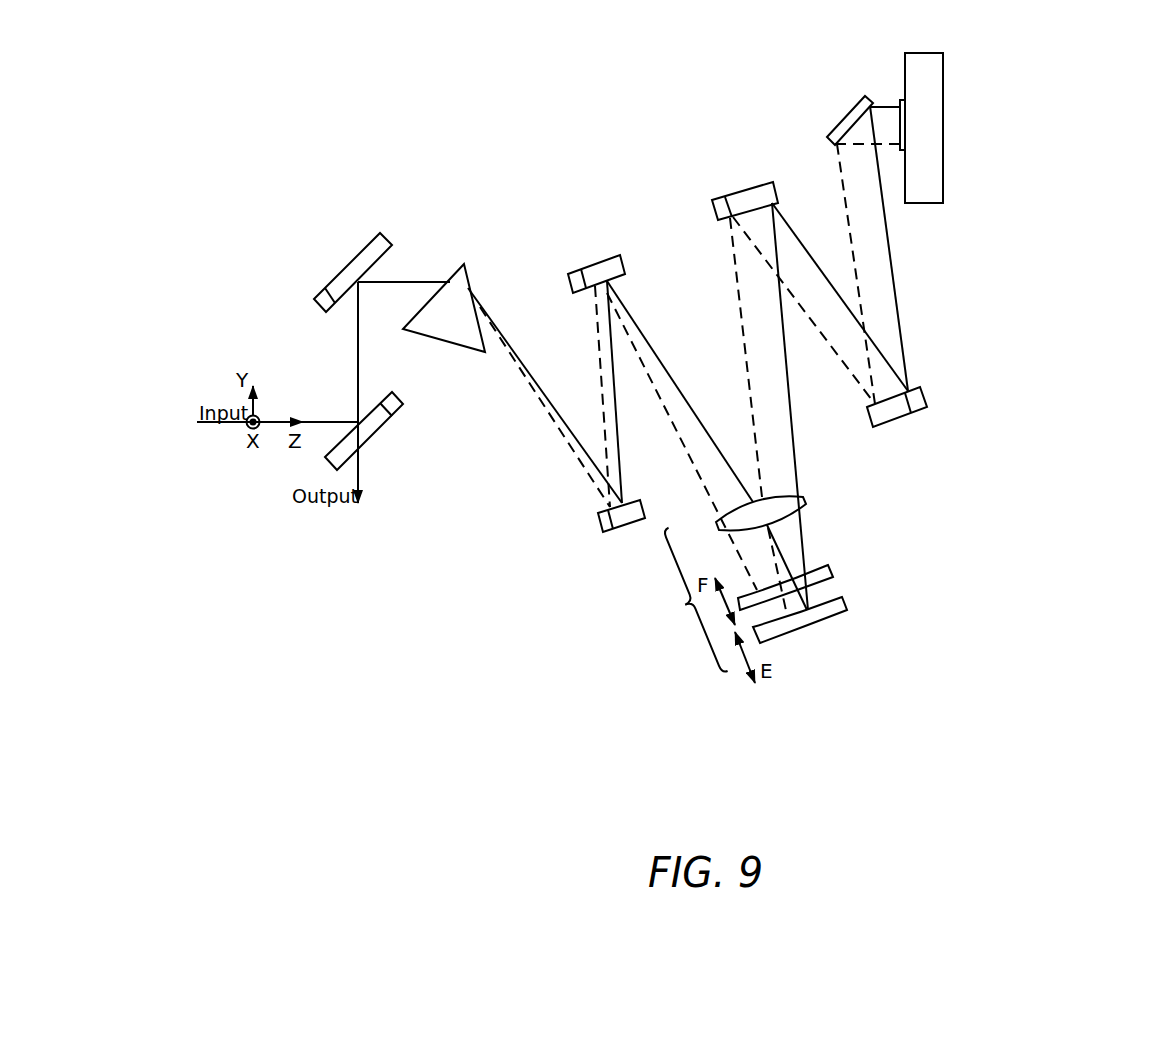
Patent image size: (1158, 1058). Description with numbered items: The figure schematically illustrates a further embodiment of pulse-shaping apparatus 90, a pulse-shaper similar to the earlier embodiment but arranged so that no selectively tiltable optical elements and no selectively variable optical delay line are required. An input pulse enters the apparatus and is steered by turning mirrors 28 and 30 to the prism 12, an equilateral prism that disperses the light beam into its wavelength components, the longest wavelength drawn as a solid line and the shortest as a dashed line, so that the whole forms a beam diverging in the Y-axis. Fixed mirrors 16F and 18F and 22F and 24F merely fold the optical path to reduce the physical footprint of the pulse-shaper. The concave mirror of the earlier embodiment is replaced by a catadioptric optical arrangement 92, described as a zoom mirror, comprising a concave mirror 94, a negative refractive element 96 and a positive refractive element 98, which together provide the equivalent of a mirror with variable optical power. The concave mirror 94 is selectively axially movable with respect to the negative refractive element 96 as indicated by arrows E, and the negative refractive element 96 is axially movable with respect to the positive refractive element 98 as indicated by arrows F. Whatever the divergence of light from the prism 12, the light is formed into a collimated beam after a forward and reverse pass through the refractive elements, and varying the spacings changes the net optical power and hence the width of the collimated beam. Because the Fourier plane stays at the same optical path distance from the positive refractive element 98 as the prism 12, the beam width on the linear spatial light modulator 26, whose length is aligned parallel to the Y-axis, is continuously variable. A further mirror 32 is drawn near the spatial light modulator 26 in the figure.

The prism 12 is at (464, 347).
The fixed mirror 16F is at (603, 513).
The fixed mirror 18F is at (580, 270).
The fixed mirror 22F is at (728, 200).
The fixed mirror 24F is at (920, 410).
The linear spatial light modulator 26 is at (907, 128).
The turning mirror 28 is at (390, 420).
The turning mirror 30 is at (333, 292).
The mirror 32 is at (860, 107).
The pulse-shaping apparatus 90 is at (1052, 670).
The catadioptric optical arrangement 92 is at (690, 602).
The concave mirror 94 is at (843, 603).
The negative refractive element 96 is at (833, 570).
The positive refractive element 98 is at (805, 502).